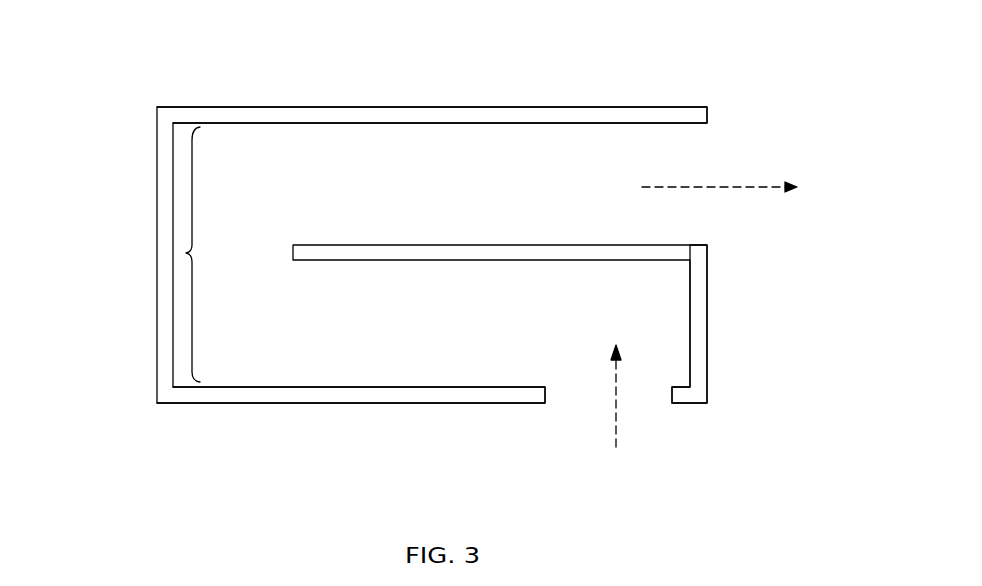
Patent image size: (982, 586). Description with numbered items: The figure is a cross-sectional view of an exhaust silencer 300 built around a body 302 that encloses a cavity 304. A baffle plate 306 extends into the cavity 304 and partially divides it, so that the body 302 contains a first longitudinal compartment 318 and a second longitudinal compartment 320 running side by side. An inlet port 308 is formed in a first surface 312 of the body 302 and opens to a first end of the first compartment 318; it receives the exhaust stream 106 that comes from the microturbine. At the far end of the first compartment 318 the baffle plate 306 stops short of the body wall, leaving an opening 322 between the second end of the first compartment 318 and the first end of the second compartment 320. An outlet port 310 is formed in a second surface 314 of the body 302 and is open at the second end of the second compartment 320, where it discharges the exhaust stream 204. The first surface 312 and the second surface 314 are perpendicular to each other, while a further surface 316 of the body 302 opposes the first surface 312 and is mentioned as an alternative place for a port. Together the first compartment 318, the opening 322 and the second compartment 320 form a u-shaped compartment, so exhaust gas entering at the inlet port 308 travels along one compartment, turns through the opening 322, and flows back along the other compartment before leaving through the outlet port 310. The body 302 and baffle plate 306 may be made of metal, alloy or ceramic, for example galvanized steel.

The exhaust silencer 300 is at (90, 27).
The body 302 is at (175, 107).
The cavity 304 is at (190, 250).
The baffle plate 306 is at (510, 242).
The inlet port 308 is at (645, 398).
The outlet port 310 is at (707, 162).
The first surface 312 is at (462, 405).
The second surface 314 is at (707, 325).
The surface 316 is at (478, 107).
The first longitudinal compartment 318 is at (438, 334).
The second longitudinal compartment 320 is at (433, 180).
The opening 322 is at (232, 250).
The exhaust stream 106 is at (615, 425).
The exhaust stream 204 is at (762, 183).